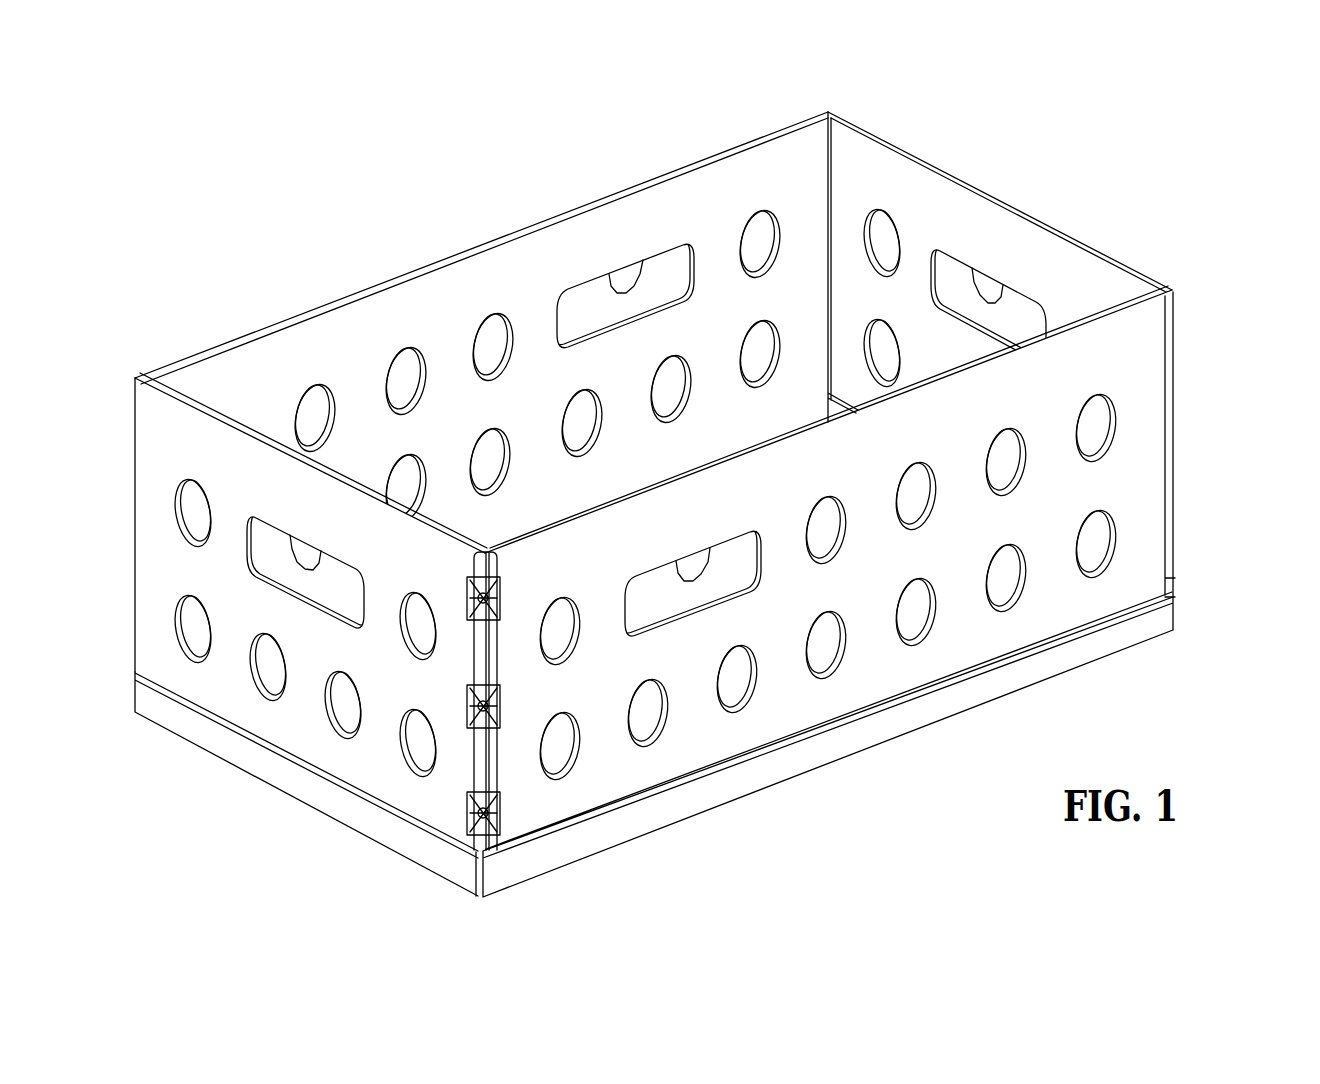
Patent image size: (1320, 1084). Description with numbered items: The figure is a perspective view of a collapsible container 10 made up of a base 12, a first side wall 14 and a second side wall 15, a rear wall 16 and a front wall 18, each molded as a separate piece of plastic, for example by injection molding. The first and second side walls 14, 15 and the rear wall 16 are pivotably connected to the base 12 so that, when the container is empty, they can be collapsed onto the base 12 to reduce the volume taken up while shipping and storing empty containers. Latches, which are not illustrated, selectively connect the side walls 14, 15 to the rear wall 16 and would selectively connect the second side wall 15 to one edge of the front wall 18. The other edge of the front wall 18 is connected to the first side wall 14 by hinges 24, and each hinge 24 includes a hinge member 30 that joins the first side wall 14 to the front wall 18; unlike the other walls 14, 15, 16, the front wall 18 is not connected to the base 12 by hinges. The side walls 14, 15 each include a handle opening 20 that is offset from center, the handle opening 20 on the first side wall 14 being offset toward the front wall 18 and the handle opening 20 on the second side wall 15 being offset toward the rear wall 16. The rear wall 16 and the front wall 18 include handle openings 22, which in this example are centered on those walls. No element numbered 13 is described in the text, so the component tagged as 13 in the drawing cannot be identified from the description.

The collapsible container 10 is at (1163, 136).
The base 12 is at (862, 750).
The front end wall 13 is at (311, 576).
The first side wall 14 is at (682, 473).
The second side wall 15 is at (601, 284).
The rear wall 16 is at (993, 190).
The front wall 18 is at (213, 400).
The handle opening 20 is at (577, 289).
The handle opening 22 is at (1013, 290).
The hinge 24 is at (497, 580).
The hinge member 30 is at (470, 592).